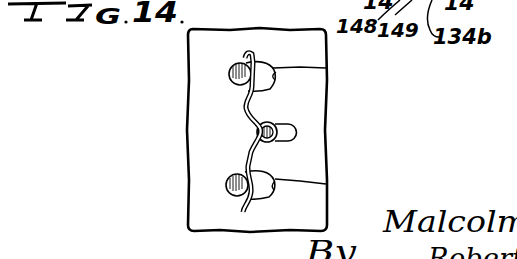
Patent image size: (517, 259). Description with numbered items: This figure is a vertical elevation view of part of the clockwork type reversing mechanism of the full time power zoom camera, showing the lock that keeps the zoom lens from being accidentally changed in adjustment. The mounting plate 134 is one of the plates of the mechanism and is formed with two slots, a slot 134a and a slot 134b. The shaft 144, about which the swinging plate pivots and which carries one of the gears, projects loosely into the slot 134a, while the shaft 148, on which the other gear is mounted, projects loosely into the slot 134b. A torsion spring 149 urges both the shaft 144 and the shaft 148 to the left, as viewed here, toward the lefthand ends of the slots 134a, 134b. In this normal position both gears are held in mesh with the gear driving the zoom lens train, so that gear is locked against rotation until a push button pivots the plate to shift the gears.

The mounting plate 134 is at (326, 114).
The slot 134a is at (326, 184).
The slot 134b is at (326, 68).
The shaft 144 is at (226, 186).
The shaft 148 is at (229, 73).
The torsion spring 149 is at (290, 14).